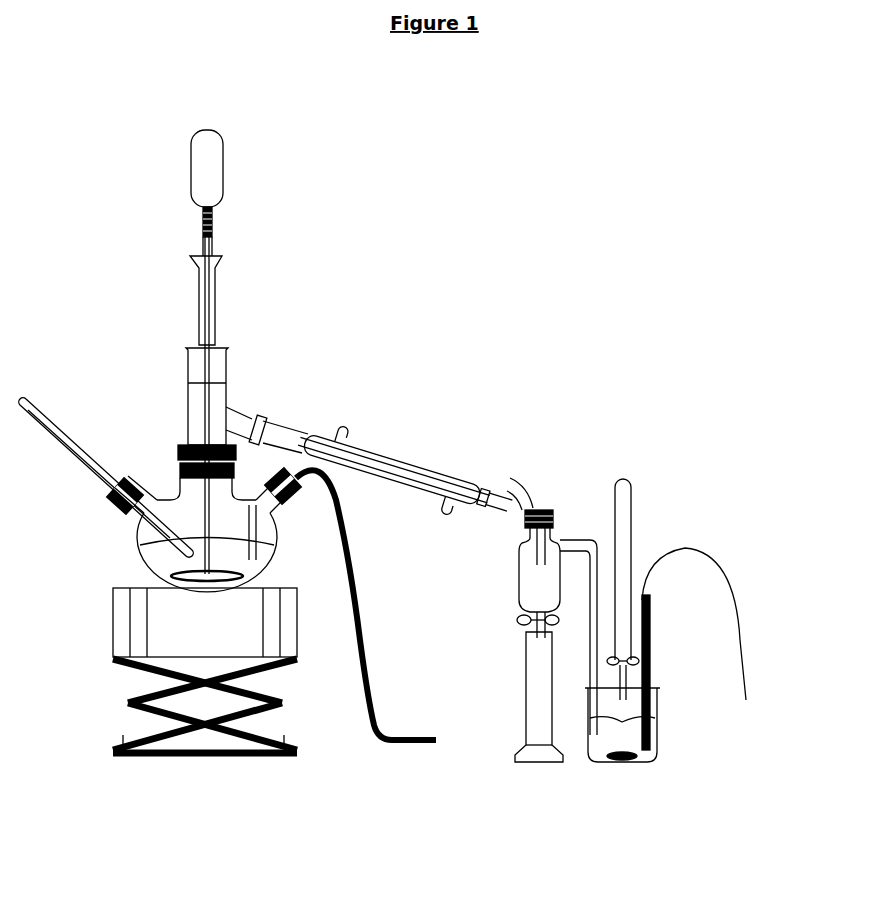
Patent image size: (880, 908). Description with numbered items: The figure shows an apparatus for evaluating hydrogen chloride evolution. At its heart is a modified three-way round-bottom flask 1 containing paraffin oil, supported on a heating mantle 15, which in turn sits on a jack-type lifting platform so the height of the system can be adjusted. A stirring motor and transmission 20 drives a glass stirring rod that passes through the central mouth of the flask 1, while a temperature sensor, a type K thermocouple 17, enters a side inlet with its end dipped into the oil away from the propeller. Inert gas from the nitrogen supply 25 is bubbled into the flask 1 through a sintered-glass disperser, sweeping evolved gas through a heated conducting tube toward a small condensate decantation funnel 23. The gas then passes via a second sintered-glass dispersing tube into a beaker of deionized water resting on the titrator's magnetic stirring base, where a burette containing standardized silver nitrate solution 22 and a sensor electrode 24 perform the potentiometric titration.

The three-way round-bottom flask 1 is at (315, 414).
The heating mantle 15 is at (205, 670).
The temperature sensor (type K thermocouple) 17 is at (106, 471).
The stirring motor and transmission 20 is at (185, 237).
The burette containing standardized AgNO3 solution 22 is at (620, 577).
The condensate decantation funnel 23 is at (533, 636).
The sensor (electrode) 24 is at (665, 655).
The nitrogen supply 25 is at (455, 708).